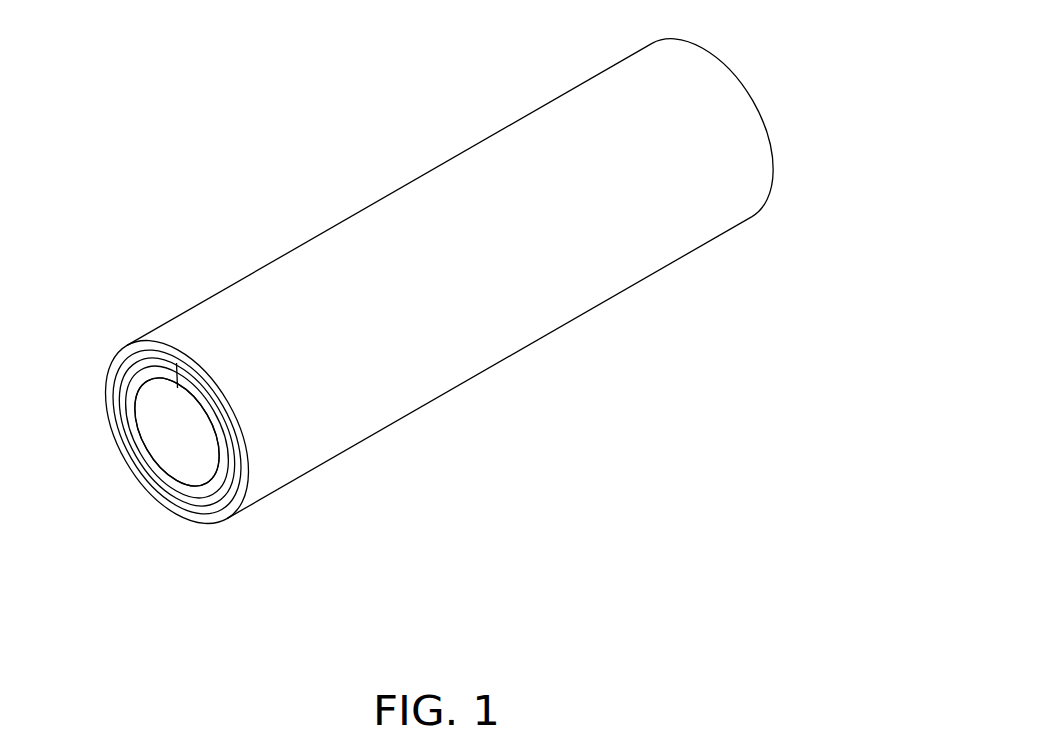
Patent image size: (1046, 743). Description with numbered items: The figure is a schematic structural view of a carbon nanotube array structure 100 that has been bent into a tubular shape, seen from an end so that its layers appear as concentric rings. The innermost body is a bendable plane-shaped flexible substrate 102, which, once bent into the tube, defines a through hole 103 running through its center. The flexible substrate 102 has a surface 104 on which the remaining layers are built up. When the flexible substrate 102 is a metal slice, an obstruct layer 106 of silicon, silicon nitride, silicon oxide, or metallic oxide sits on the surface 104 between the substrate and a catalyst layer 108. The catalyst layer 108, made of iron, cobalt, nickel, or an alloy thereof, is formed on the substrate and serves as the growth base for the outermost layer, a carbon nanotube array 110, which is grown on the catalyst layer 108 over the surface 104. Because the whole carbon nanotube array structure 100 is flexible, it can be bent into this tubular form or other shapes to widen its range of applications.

The carbon nanotube array structure 100 is at (383, 70).
The flexible substrate 102 is at (163, 473).
The through hole 103 is at (158, 428).
The surface 104 is at (131, 425).
The obstruct layer 106 is at (173, 489).
The catalyst layer 108 is at (182, 502).
The carbon nanotube array 110 is at (207, 517).